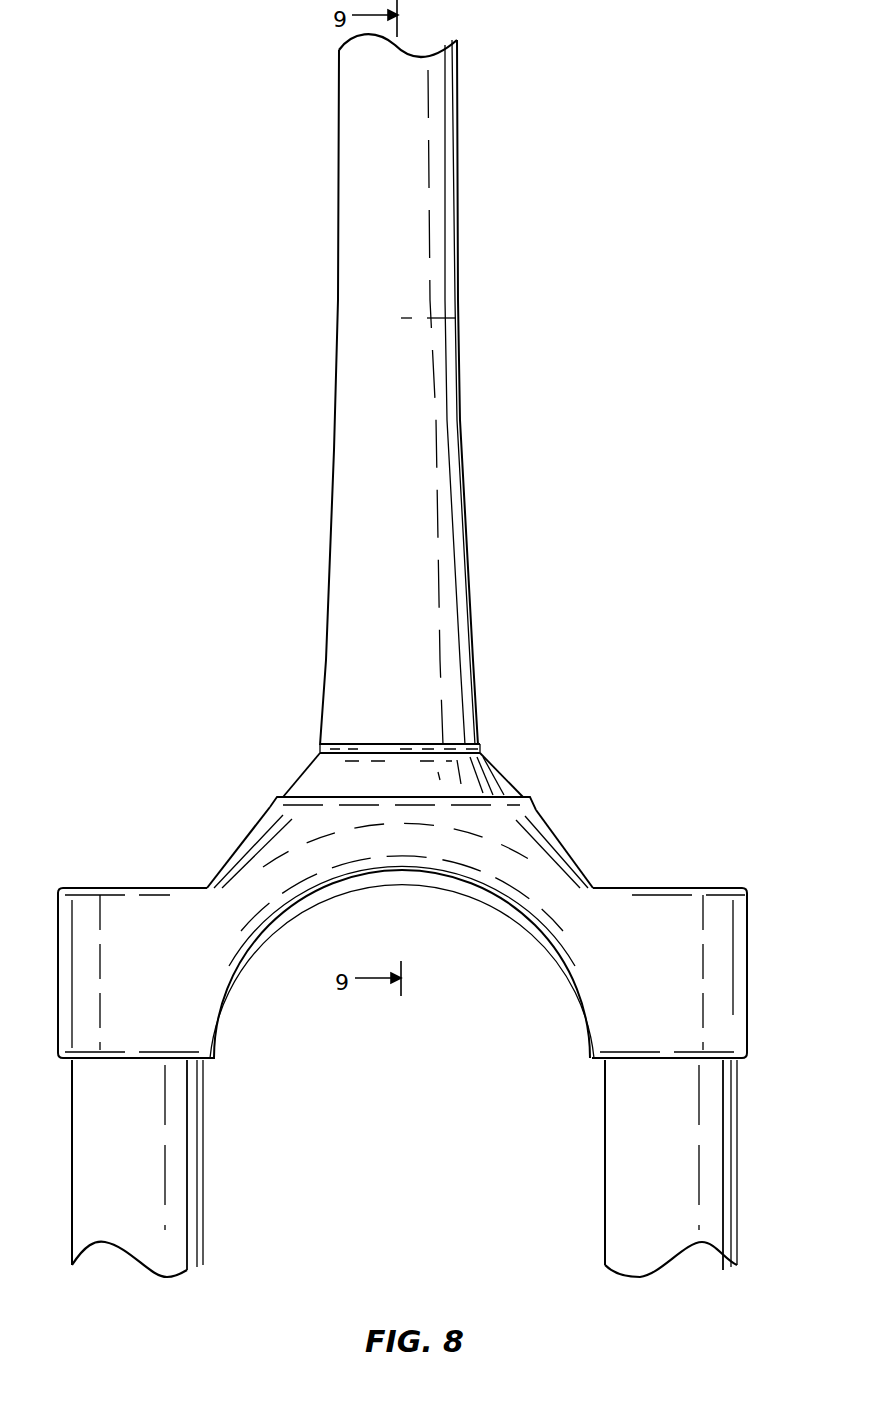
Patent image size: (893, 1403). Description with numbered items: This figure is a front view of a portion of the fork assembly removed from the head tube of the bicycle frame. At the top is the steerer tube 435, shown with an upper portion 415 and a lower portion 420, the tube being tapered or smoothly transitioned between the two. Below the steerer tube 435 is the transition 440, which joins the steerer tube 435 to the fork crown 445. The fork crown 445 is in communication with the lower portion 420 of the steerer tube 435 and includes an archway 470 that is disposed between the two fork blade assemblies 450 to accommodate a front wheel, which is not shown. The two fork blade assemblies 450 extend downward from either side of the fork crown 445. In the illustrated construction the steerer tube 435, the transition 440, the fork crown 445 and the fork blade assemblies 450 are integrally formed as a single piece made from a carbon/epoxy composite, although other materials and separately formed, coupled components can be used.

The upper portion 415 is at (460, 80).
The steerer tube 435 is at (339, 285).
The lower portion 420 is at (478, 702).
The transition 440 is at (494, 771).
The fork crown 445 is at (531, 811).
The archway 470 is at (438, 895).
The fork blade assemblies 450 is at (203, 1138).